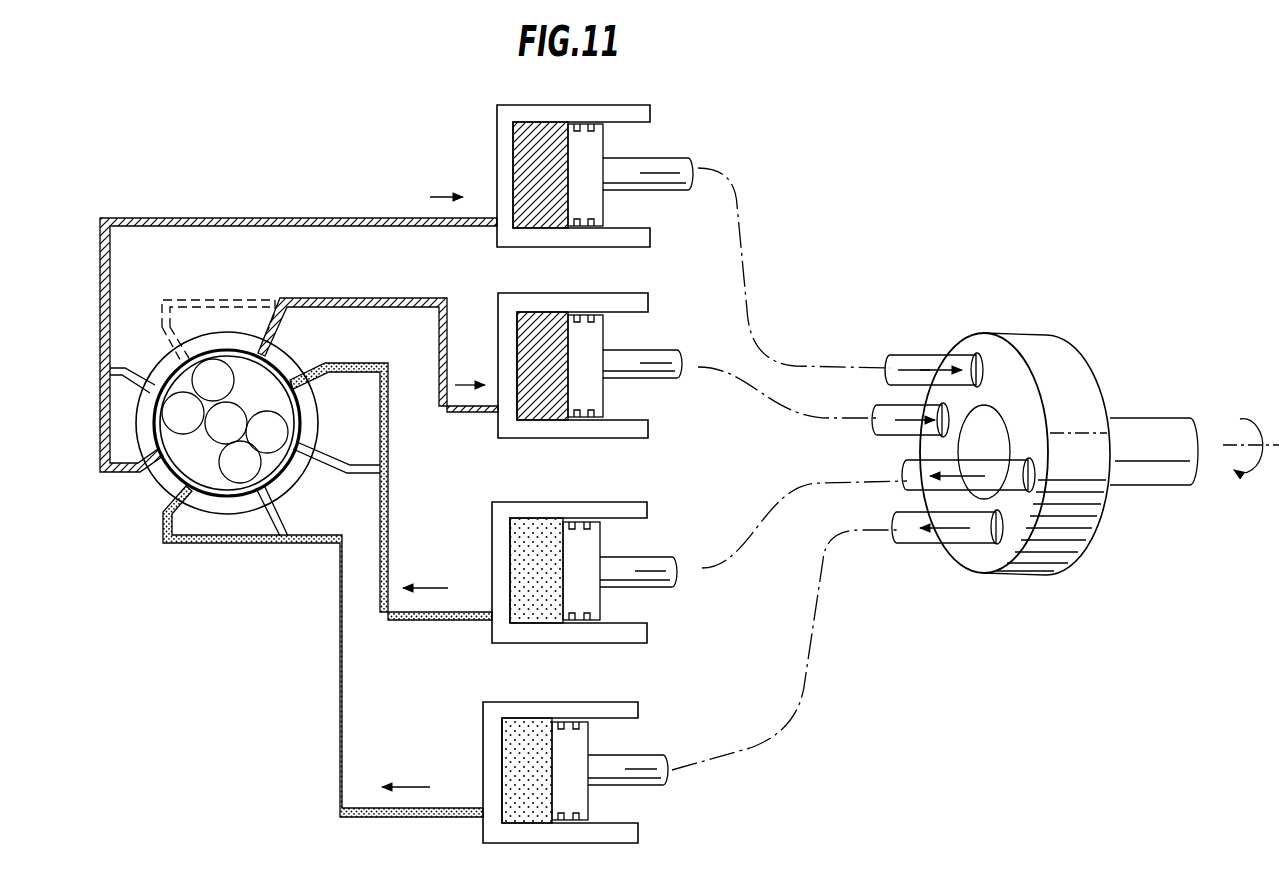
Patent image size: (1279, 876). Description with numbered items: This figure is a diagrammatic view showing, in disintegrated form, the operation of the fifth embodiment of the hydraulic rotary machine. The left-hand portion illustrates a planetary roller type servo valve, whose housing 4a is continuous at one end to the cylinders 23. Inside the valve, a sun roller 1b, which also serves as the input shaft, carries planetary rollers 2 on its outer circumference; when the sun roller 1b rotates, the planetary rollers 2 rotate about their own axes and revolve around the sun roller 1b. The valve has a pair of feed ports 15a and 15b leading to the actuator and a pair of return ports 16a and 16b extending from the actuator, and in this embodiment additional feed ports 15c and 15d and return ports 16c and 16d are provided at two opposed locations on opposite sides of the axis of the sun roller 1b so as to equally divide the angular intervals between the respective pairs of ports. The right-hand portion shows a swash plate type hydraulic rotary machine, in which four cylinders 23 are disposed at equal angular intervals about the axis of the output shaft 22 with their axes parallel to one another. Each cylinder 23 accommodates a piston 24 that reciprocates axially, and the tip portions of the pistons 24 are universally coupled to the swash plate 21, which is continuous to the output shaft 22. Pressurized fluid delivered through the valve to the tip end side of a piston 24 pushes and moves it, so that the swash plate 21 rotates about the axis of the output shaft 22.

The sun roller 1b is at (203, 433).
The planetary rollers 2 is at (258, 416).
The housing of planetary roller type servo valve 4a is at (222, 513).
The feed port 15a is at (226, 314).
The feed port 15b is at (283, 498).
The feed port 15c is at (306, 420).
The feed port 15d is at (153, 470).
The return port 16a is at (180, 366).
The return port 16b is at (171, 493).
The return port 16c is at (294, 378).
The return port 16d is at (152, 398).
The swash plate 21 is at (1020, 333).
The output shaft 22 is at (1130, 418).
The cylinders 23 is at (497, 130).
The pistons 24 is at (665, 158).